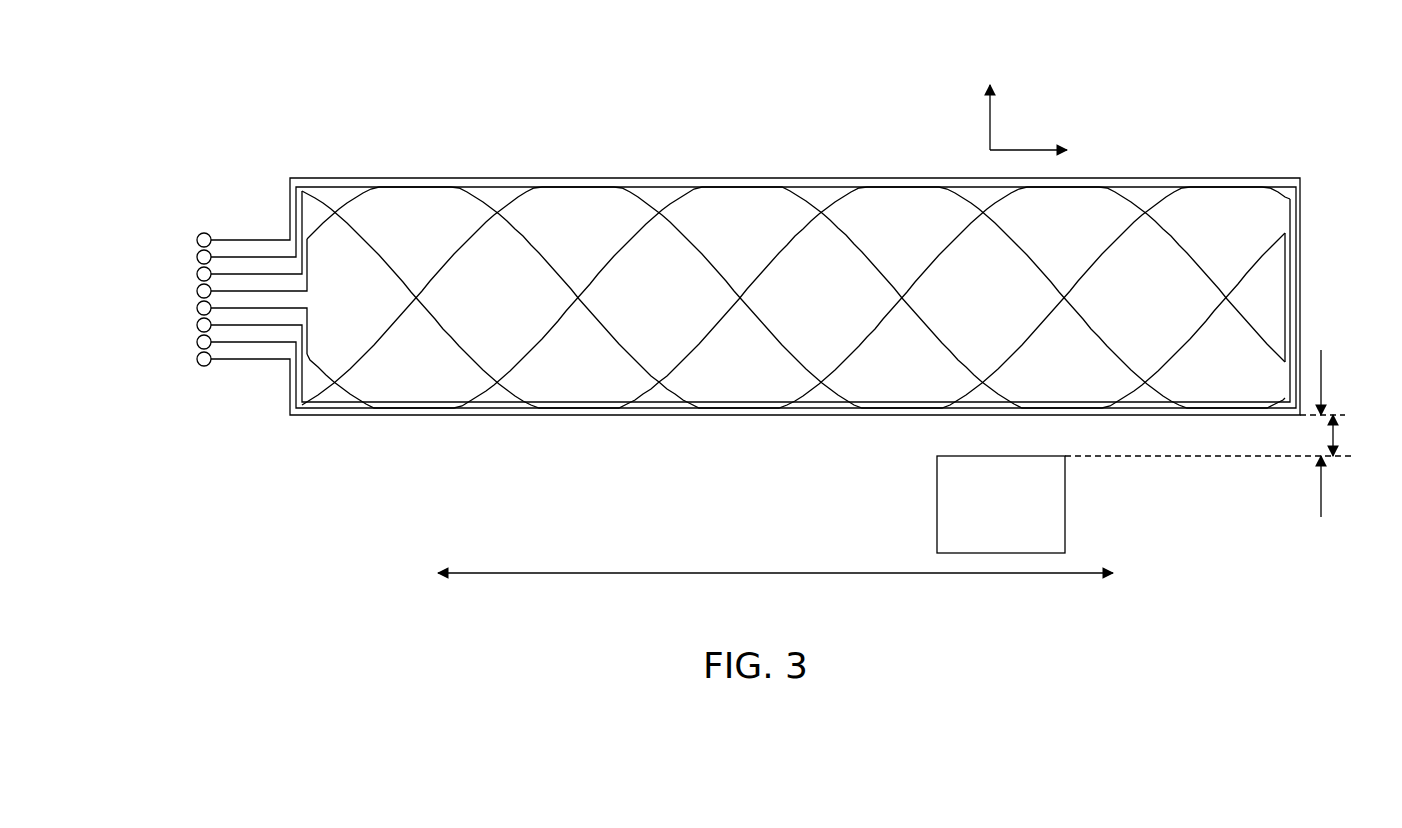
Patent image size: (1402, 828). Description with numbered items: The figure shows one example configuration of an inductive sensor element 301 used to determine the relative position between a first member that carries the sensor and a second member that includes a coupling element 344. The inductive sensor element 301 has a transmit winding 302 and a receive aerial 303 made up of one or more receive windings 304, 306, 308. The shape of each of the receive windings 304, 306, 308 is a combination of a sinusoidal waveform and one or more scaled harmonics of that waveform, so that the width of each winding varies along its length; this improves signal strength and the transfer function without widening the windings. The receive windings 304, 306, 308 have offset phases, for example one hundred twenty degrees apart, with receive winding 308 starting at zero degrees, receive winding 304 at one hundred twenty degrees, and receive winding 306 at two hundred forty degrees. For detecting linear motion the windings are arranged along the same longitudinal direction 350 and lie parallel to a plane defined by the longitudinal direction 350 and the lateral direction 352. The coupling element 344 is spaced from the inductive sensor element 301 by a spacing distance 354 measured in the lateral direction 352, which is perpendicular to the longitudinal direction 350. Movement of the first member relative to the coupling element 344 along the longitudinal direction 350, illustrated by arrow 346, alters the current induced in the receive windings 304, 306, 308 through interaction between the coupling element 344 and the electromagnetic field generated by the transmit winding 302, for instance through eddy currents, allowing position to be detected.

The inductive sensor element 301 is at (269, 160).
The transmit winding 302 is at (290, 212).
The receive aerial 303 is at (124, 225).
The receive winding 304 is at (197, 243).
The receive winding 306 is at (197, 276).
The receive winding 308 is at (197, 291).
The coupling element 344 is at (1065, 504).
The arrow 346 is at (525, 575).
The longitudinal direction 350 is at (1052, 152).
The lateral direction 352 is at (993, 105).
The spacing distance 354 is at (1335, 433).